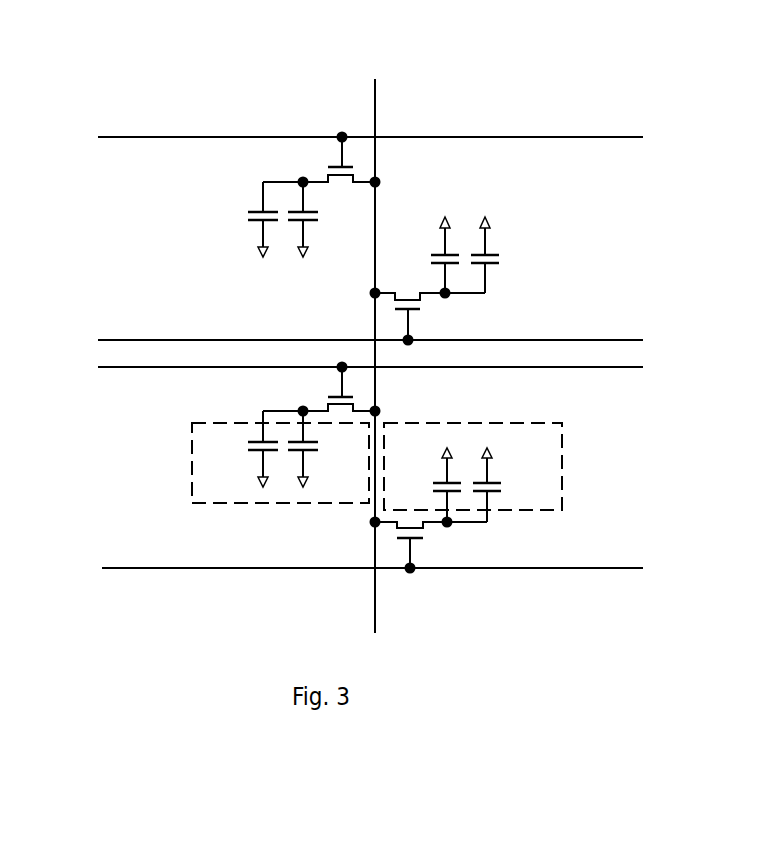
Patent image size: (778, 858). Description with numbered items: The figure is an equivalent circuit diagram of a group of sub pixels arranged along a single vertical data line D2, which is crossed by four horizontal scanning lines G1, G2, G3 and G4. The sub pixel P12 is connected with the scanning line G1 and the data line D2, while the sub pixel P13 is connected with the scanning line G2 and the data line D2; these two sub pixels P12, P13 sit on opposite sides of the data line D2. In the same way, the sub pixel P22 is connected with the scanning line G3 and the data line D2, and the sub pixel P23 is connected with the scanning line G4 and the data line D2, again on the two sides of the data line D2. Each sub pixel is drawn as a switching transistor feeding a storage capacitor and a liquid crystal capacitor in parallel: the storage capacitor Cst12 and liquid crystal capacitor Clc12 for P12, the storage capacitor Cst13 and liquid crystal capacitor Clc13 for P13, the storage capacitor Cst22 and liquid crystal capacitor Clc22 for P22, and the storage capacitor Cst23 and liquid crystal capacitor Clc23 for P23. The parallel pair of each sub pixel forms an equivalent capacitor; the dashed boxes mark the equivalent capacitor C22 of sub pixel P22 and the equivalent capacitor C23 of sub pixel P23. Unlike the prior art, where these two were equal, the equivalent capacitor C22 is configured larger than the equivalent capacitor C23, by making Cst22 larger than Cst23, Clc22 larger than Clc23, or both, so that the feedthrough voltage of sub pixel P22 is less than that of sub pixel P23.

The data line D2 is at (381, 332).
The scanning line G1 is at (337, 138).
The scanning line G2 is at (336, 340).
The scanning line G3 is at (336, 367).
The scanning line G4 is at (336, 573).
The sub pixel P12 is at (295, 160).
The sub pixel P13 is at (447, 317).
The sub pixel P22 is at (299, 389).
The sub pixel P23 is at (449, 545).
The liquid crystal capacitor Clc12 is at (238, 219).
The storage capacitor Cst12 is at (326, 219).
The storage capacitor Cst13 is at (423, 255).
The liquid crystal capacitor Clc13 is at (507, 255).
The liquid crystal capacitor Clc22 is at (242, 449).
The storage capacitor Cst22 is at (322, 449).
The storage capacitor Cst23 is at (425, 485).
The liquid crystal capacitor Clc23 is at (508, 485).
The equivalent capacitor C22 is at (246, 466).
The equivalent capacitor C23 is at (502, 468).